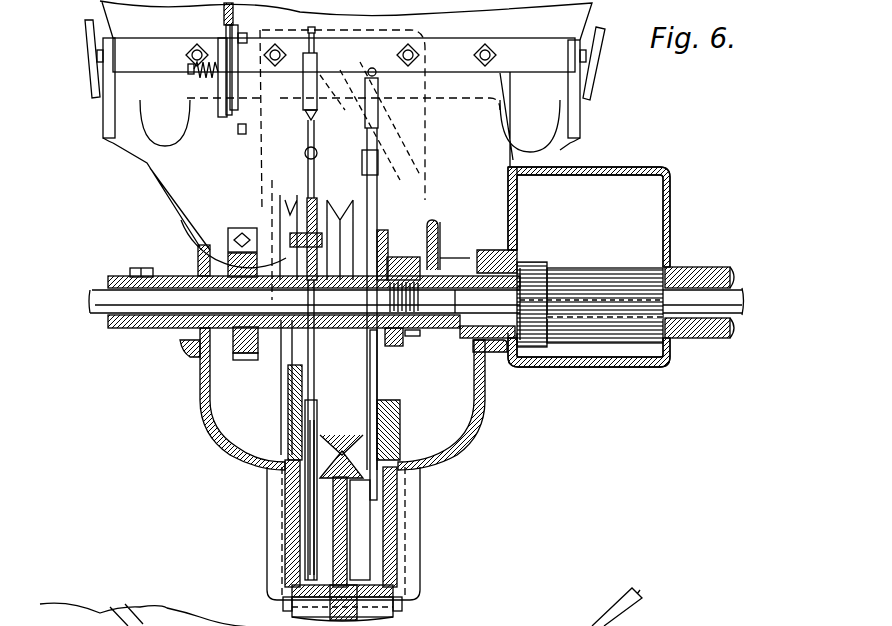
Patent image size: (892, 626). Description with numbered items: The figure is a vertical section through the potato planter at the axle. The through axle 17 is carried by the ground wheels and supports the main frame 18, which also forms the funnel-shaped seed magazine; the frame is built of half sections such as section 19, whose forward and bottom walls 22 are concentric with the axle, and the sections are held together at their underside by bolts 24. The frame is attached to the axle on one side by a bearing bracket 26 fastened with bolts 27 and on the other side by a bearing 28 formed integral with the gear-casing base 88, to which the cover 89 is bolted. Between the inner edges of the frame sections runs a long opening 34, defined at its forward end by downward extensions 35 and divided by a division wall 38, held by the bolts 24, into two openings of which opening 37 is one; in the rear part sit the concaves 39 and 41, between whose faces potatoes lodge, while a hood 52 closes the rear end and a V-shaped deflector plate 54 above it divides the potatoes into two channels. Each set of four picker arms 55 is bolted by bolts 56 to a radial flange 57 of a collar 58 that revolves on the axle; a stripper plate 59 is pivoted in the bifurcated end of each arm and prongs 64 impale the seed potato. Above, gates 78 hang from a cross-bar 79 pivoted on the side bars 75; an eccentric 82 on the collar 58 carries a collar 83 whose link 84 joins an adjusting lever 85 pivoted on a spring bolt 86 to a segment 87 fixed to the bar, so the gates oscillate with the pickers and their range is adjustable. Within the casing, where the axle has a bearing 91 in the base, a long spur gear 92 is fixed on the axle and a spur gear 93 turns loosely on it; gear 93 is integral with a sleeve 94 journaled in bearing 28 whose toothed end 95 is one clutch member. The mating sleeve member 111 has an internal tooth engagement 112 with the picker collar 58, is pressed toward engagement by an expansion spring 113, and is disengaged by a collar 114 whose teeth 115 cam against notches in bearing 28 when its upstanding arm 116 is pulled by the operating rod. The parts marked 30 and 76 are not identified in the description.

The axle 17 is at (92, 298).
The main frame 18 is at (200, 372).
The frame half section 19 is at (483, 405).
The forward and bottom walls 22 is at (208, 413).
The bolts 24 is at (402, 607).
The bearing bracket 26 is at (180, 276).
The bolts 27 is at (140, 268).
The bearing 28 is at (493, 352).
The cylinder 30 is at (372, 535).
The opening 34 is at (392, 490).
The downward integral extensions 35 is at (290, 530).
The opening 37 is at (310, 563).
The division wall 38 is at (347, 518).
The presser boot or concave 39 is at (392, 425).
The presser boot or concave 41 is at (283, 470).
The hood 52 is at (345, 195).
The V-shaped deflector and division plate 54 is at (380, 143).
The picker arms 55 is at (366, 160).
The bolts 56 is at (295, 250).
The radial flange 57 is at (270, 206).
The picker arm collar 58 is at (295, 357).
The stripper plate 59 is at (316, 30).
The prongs 64 is at (314, 137).
The side bars 75 is at (103, 118).
The arm 76 is at (92, 47).
The gates 78 is at (336, 165).
The cross-bar 79 is at (344, 55).
The eccentric 82 is at (246, 350).
The collar 83 is at (235, 371).
The link connection 84 is at (238, 130).
The adjusting lever 85 is at (240, 22).
The spring bolt 86 is at (190, 69).
The segment 87 is at (223, 21).
The base 88 is at (625, 367).
The cover 89 is at (672, 212).
The bearing 91 is at (695, 268).
The spur gear 92 is at (620, 268).
The spur gear 93 is at (553, 292).
The sleeve 94 is at (523, 270).
The toothed end 95 is at (462, 300).
The sleeve clutch member 111 is at (420, 335).
The internal tooth engagement 112 is at (403, 348).
The expansion spring 113 is at (388, 300).
The collar 114 is at (438, 223).
The teeth 115 is at (508, 197).
The upstanding arm 116 is at (434, 220).